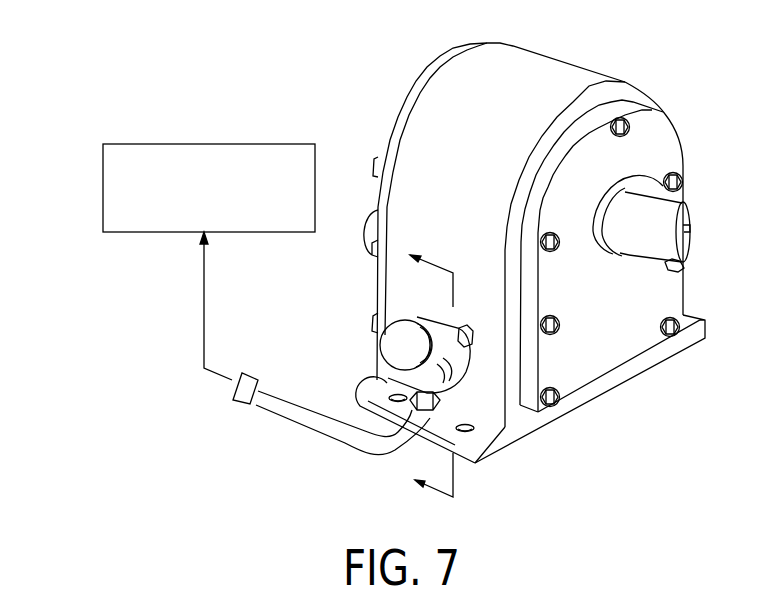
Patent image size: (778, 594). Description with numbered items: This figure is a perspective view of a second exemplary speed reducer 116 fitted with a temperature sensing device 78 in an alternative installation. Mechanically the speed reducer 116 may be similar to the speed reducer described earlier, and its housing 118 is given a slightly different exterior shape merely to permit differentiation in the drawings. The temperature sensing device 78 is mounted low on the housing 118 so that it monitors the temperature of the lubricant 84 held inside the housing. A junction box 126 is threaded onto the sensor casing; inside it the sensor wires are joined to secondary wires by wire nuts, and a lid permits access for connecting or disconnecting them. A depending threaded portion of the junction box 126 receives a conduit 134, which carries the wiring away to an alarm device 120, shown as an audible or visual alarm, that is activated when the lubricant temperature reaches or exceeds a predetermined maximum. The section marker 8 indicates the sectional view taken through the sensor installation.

The speed reducer 116 is at (582, 46).
The housing 118 is at (590, 80).
The temperature sensing device 78 is at (471, 325).
The lubricant fluid 84 is at (472, 339).
The junction box 126 is at (447, 362).
The conduit 134 is at (323, 428).
The alarm device 120 is at (103, 208).
The section line 8- 8 is at (428, 376).